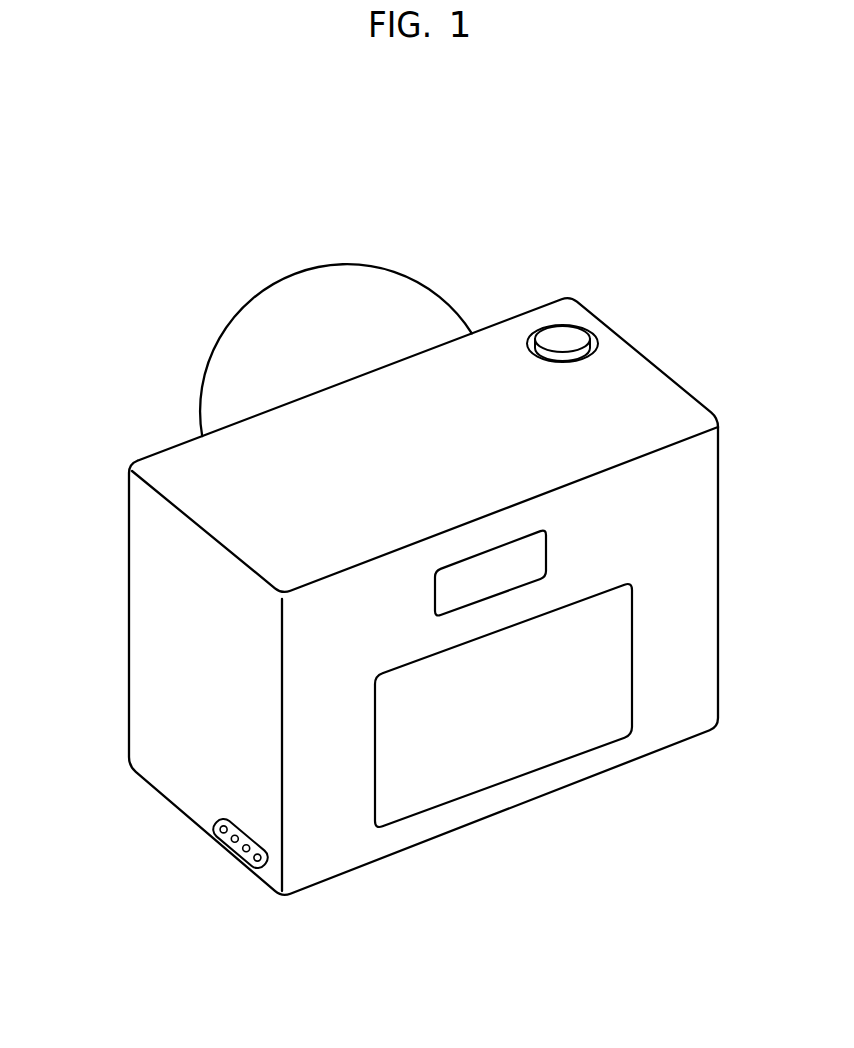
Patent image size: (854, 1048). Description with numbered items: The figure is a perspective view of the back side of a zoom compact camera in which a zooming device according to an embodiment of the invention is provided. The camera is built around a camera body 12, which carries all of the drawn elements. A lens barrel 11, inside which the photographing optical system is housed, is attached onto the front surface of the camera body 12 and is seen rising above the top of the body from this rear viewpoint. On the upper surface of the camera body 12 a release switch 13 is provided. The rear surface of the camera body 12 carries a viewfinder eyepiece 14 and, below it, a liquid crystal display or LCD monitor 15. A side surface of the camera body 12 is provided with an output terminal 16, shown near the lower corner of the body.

The lens barrel 11 is at (305, 295).
The camera body 12 is at (128, 699).
The release switch 13 is at (562, 340).
The viewfinder eyepiece 14 is at (508, 572).
The LCD monitor 15 is at (542, 701).
The output terminal 16 is at (235, 846).